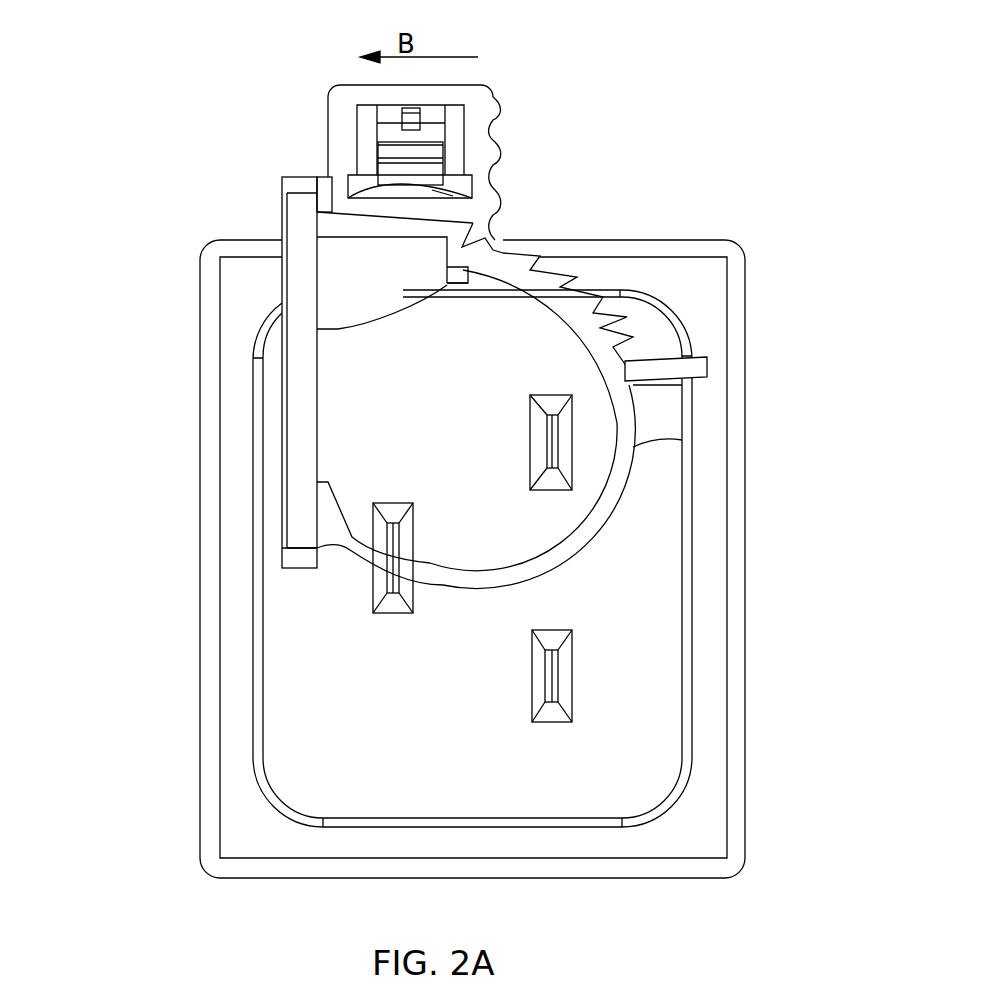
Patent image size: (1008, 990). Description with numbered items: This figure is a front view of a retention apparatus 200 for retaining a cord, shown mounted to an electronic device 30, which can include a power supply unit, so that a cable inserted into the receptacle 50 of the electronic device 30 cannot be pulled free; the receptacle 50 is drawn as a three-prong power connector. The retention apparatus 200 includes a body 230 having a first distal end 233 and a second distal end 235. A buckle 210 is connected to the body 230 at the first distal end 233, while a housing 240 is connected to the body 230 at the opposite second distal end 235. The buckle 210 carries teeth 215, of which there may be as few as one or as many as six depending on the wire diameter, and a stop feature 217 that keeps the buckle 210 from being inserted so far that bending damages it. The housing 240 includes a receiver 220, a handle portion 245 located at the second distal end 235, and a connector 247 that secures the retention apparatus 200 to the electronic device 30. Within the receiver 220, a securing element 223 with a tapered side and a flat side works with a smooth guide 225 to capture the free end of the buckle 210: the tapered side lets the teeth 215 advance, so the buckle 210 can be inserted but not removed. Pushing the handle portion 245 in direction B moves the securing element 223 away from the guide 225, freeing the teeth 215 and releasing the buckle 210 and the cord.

The electronic device 30 is at (806, 271).
The receptacle 50 is at (637, 612).
The retention apparatus 200 is at (203, 134).
The buckle 210 is at (622, 452).
The teeth 215 is at (603, 327).
The stop feature 217 is at (700, 368).
The receiver 220 is at (340, 275).
The securing element 223 is at (472, 240).
The guide 225 is at (437, 288).
The body 230 is at (303, 457).
The first distal end 233 is at (298, 557).
The second distal end 235 is at (300, 185).
The housing 240 is at (350, 97).
The handle portion 245 is at (497, 122).
The connector 247 is at (435, 185).